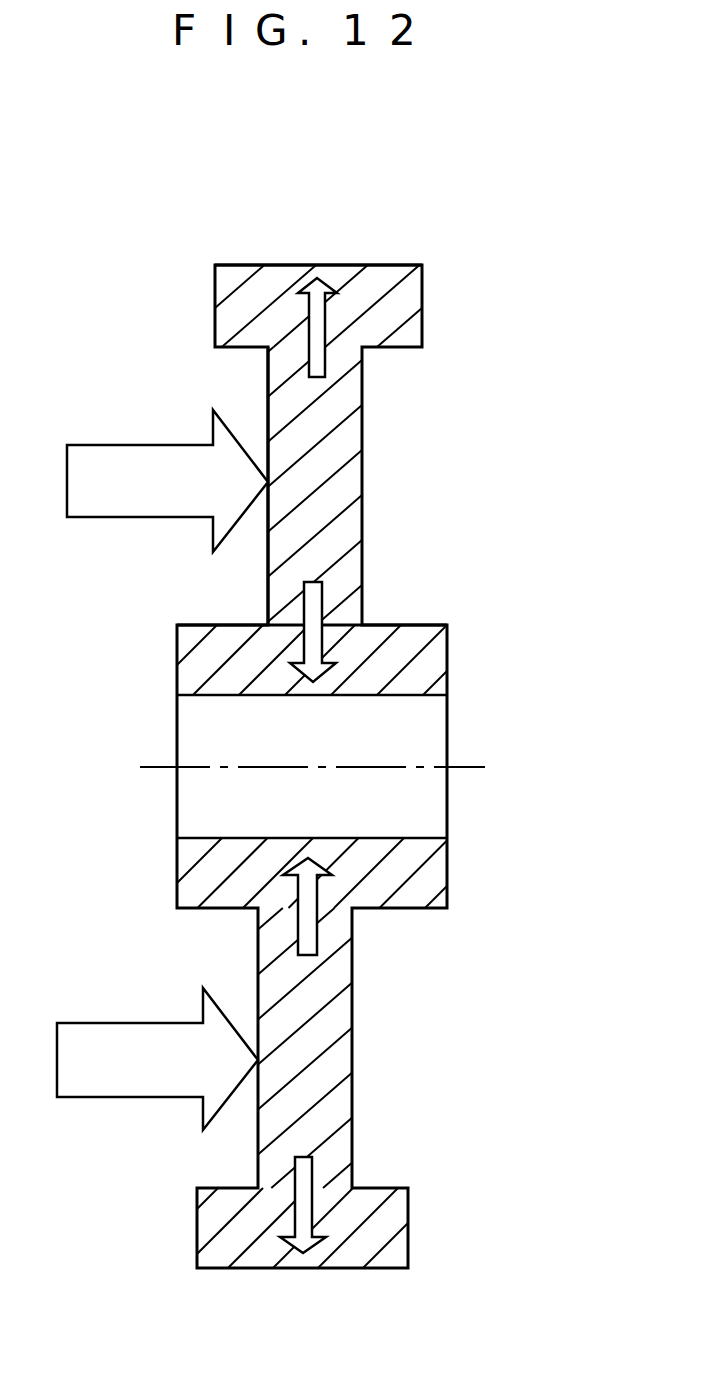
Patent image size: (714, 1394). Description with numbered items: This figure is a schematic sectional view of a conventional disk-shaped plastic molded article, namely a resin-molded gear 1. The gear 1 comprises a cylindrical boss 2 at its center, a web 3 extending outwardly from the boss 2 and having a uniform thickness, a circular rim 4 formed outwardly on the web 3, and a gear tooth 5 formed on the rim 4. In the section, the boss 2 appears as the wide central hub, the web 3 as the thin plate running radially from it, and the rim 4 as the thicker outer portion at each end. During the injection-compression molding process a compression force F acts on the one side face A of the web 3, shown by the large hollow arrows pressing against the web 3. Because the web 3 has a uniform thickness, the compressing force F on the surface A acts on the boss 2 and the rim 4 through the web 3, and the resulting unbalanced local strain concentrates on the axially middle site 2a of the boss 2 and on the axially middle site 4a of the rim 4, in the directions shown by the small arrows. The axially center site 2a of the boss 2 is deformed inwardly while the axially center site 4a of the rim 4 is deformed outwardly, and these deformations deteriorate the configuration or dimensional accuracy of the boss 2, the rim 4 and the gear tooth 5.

The resin-molded gear 1 is at (282, 1360).
The cylindrical boss 2 is at (203, 660).
The axially middle site of the boss 2a is at (315, 682).
The web 3 is at (343, 533).
The circular rim 4 is at (397, 300).
The axially middle site of the rim 4a is at (317, 265).
The gear tooth 5 is at (387, 267).
The one side face of the web A is at (268, 392).
The compression force F is at (149, 770).